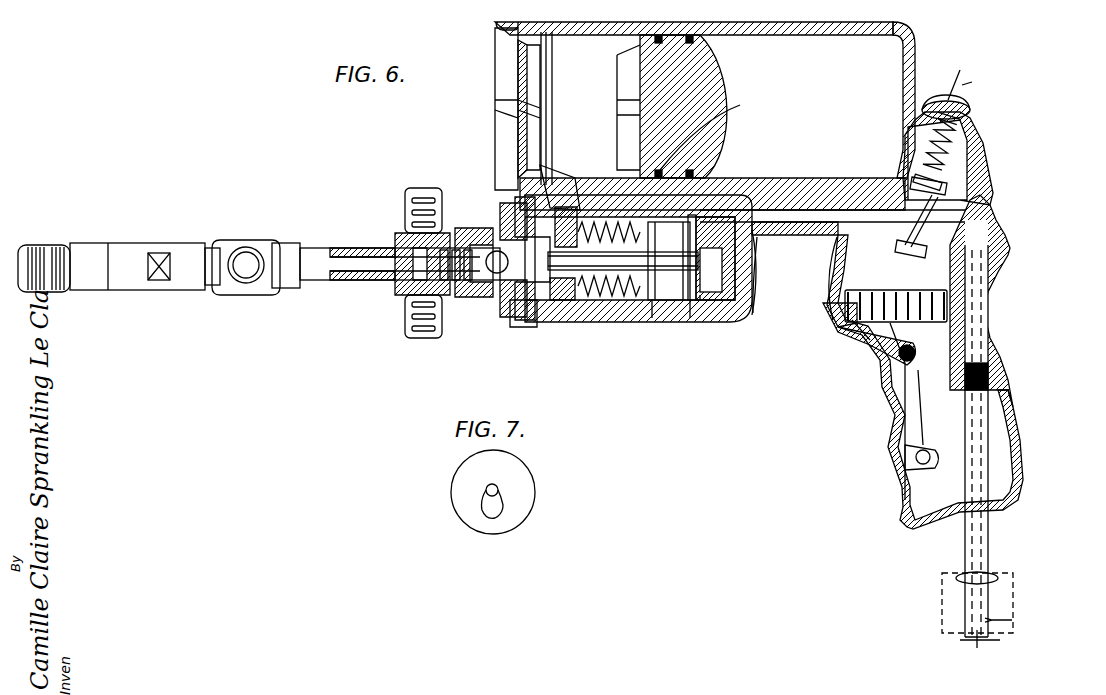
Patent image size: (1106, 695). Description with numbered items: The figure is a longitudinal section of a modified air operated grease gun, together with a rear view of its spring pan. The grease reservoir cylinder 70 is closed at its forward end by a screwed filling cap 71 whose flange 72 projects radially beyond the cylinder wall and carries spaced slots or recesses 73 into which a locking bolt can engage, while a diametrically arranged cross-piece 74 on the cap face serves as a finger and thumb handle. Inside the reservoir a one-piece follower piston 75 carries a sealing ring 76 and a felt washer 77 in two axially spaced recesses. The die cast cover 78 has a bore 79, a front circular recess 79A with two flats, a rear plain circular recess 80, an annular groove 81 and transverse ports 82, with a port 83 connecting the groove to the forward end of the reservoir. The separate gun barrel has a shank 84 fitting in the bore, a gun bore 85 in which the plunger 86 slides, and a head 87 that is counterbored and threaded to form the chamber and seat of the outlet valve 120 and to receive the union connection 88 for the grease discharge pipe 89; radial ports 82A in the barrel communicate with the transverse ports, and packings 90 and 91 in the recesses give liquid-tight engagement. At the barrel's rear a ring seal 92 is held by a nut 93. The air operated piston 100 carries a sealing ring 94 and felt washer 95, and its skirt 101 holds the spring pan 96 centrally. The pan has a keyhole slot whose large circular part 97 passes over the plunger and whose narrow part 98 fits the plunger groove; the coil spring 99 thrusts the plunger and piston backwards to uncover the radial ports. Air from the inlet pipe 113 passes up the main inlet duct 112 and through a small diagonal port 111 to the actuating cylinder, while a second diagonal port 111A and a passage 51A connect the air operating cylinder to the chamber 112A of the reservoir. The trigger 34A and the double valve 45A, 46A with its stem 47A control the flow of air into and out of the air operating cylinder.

In FIG. 6, the grease reservoir cylinder 70 is at (900, 50).
In FIG. 6, the filling cap 71 is at (495, 145).
In FIG. 6, the flange 72 is at (548, 40).
In FIG. 6, the slots or recesses 73 is at (496, 30).
In FIG. 6, the cross-piece 74 is at (518, 105).
In FIG. 6, the follower piston 75 is at (712, 138).
In FIG. 6, the sealing ring 76 is at (694, 40).
In FIG. 6, the felt washer 77 is at (636, 45).
In FIG. 6, the cover 78 is at (495, 215).
In FIG. 6, the bore 79 is at (520, 225).
In FIG. 6, the circular recess 79A is at (515, 305).
In FIG. 6, the circular recess 80 is at (580, 200).
In FIG. 6, the annular groove 81 is at (525, 322).
In FIG. 6, the transverse port 82 is at (520, 322).
In FIG. 6, the radial ports 82A is at (595, 250).
In FIG. 6, the port 83 is at (555, 175).
In FIG. 6, the shank 84 is at (562, 302).
In FIG. 6, the gun bore 85 is at (470, 283).
In FIG. 6, the plunger 86 is at (660, 270).
In FIG. 6, the head 87 is at (490, 255).
In FIG. 6, the union connection 88 is at (398, 290).
In FIG. 6, the grease discharge pipe 89 is at (612, 232).
In FIG. 6, the packing 90 is at (518, 318).
In FIG. 6, the packing 91 is at (660, 165).
In FIG. 6, the ring seal 92 is at (688, 236).
In FIG. 6, the nut 93 is at (612, 300).
In FIG. 6, the sealing ring 94 is at (742, 318).
In FIG. 6, the felt washer 95 is at (705, 305).
In FIG. 6, the spring pan 96 is at (715, 258).
In FIG. 7, the spring pan 96 is at (508, 458).
In FIG. 7, the circular part of slot 97 is at (495, 510).
In FIG. 7, the narrow part of slot 98 is at (498, 490).
In FIG. 6, the coil spring 99 is at (703, 352).
In FIG. 6, the air operated piston 100 is at (748, 290).
In FIG. 6, the skirt 101 is at (655, 305).
In FIG. 6, the outlet valve 120 is at (412, 198).
In FIG. 6, the trigger 34A is at (835, 240).
In FIG. 6, the double valve 45A is at (910, 172).
In FIG. 6, the double valve 46A is at (896, 296).
In FIG. 6, the stem 47A is at (990, 212).
In FIG. 6, the passage 51A is at (795, 205).
In FIG. 6, the diagonal port 111 is at (990, 232).
In FIG. 6, the second diagonal port 111A is at (948, 186).
In FIG. 6, the main inlet duct 112 is at (985, 275).
In FIG. 6, the chamber 112A is at (960, 155).
In FIG. 6, the air inlet pipe 113 is at (978, 550).